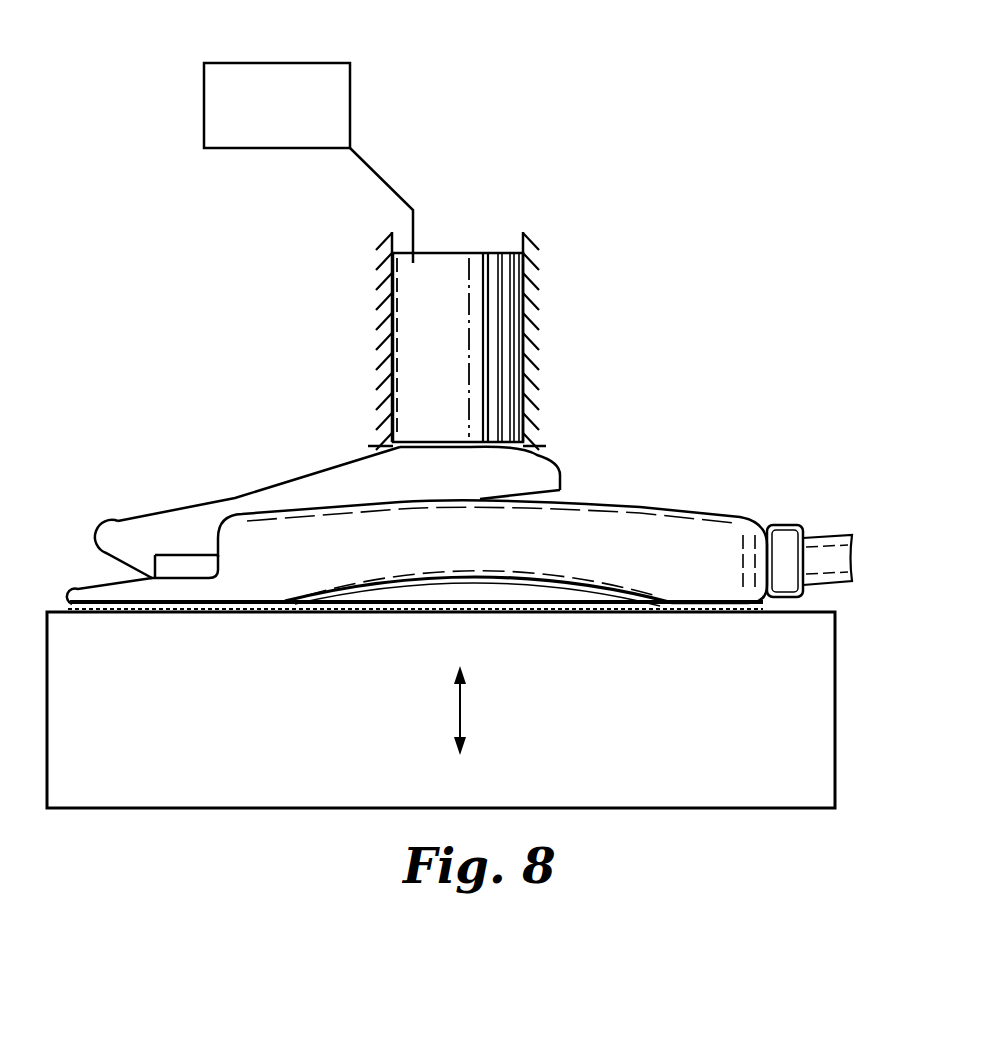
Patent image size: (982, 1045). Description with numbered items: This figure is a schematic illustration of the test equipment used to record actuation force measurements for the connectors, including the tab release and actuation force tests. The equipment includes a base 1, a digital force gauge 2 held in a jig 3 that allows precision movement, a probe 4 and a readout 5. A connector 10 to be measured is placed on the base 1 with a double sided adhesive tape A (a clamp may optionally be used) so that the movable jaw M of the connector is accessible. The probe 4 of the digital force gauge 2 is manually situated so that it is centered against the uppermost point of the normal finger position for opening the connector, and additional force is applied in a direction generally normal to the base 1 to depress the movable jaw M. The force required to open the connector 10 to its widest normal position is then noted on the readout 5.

The base 1 is at (818, 676).
The digital force gauge 2 is at (340, 63).
The jig 3 is at (381, 305).
The probe 4 is at (407, 383).
The readout 5 is at (350, 100).
The electrode 10 is at (664, 511).
The movable jaw M is at (236, 500).
The double sided adhesive tape A is at (565, 613).